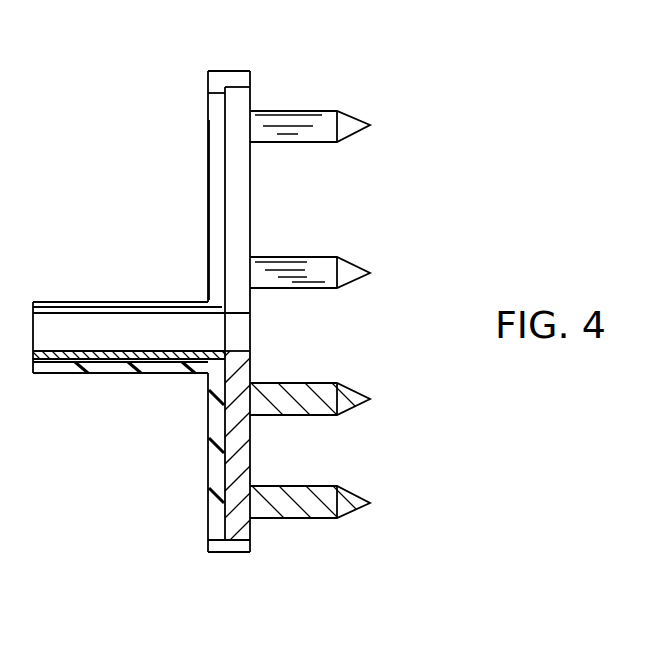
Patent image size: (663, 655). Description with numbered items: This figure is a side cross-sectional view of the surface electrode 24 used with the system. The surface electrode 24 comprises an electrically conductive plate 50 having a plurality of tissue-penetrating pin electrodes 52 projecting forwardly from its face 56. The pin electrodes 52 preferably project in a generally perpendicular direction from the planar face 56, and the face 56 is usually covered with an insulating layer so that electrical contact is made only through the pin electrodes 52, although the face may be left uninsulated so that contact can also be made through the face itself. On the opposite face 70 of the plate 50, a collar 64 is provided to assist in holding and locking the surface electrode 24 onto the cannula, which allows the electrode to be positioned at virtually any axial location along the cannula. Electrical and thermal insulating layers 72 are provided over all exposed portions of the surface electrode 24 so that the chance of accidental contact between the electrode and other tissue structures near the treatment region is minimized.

The surface electrode 24 is at (180, 50).
The electrically conductive plate 50 is at (228, 548).
The tissue-penetrating pin electrodes 52 is at (330, 143).
The face 56 is at (250, 197).
The collar 64 is at (79, 307).
The opposite face 70 is at (208, 183).
The electrical and thermal insulating layers 72 is at (207, 425).